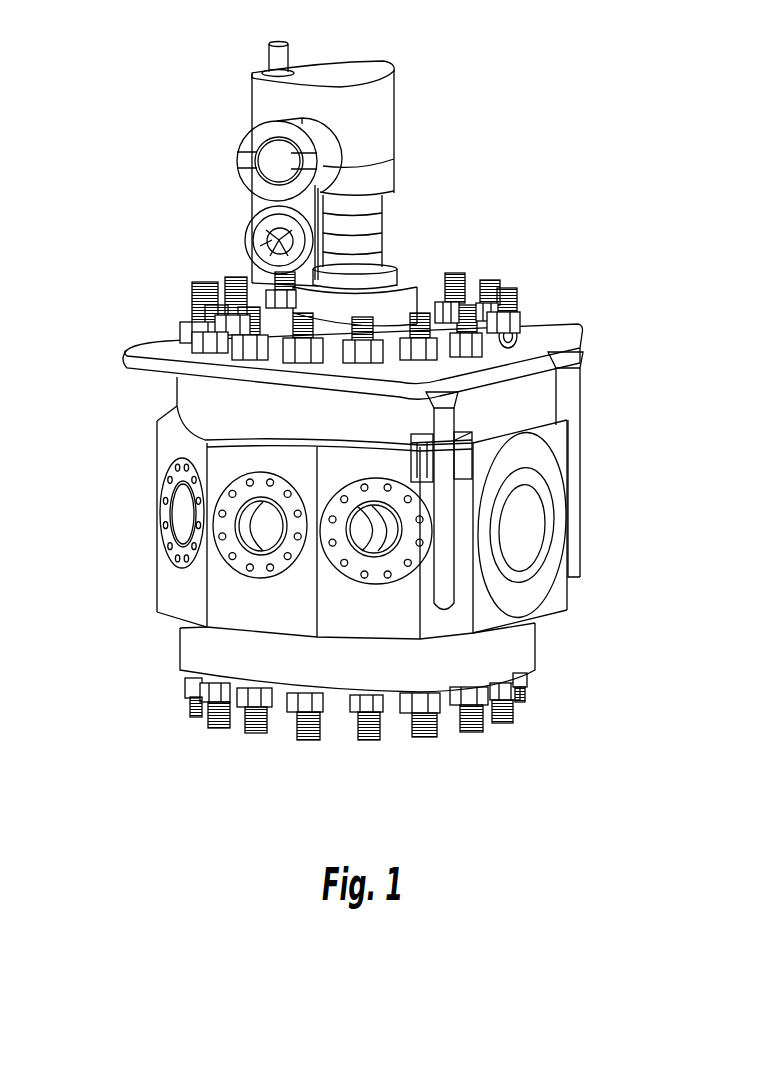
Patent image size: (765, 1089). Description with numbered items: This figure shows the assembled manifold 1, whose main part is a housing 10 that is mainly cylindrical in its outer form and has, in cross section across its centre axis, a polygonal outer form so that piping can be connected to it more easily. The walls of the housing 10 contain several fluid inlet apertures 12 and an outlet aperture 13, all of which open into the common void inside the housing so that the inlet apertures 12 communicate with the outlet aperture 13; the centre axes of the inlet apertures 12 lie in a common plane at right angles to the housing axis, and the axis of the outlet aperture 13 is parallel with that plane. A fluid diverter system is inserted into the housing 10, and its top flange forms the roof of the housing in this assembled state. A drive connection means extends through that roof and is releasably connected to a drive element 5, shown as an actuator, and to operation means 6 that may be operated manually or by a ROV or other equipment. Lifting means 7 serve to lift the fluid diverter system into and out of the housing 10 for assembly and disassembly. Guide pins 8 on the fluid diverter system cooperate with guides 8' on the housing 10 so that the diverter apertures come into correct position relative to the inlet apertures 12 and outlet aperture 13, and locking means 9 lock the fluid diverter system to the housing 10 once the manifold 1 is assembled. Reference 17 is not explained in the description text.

The manifold 1 is at (123, 419).
The drive element 5 is at (380, 115).
The operation means 6 is at (277, 59).
The lifting means 7 is at (528, 327).
The guide pins 8 is at (498, 529).
The guides 8' is at (599, 464).
The locking means 9 is at (490, 280).
The housing 10 is at (173, 583).
The fluid inlet apertures 12 is at (178, 515).
The outlet aperture 13 is at (530, 530).
The lower flange 17 is at (225, 557).